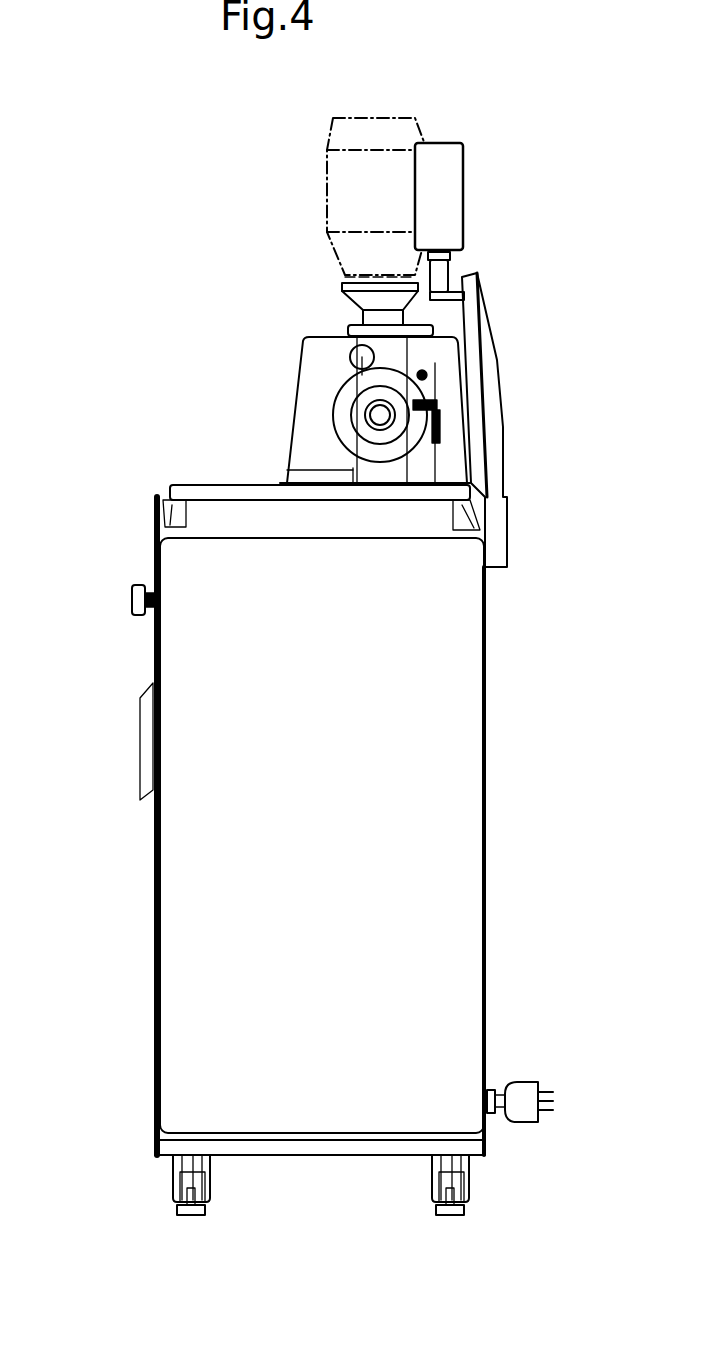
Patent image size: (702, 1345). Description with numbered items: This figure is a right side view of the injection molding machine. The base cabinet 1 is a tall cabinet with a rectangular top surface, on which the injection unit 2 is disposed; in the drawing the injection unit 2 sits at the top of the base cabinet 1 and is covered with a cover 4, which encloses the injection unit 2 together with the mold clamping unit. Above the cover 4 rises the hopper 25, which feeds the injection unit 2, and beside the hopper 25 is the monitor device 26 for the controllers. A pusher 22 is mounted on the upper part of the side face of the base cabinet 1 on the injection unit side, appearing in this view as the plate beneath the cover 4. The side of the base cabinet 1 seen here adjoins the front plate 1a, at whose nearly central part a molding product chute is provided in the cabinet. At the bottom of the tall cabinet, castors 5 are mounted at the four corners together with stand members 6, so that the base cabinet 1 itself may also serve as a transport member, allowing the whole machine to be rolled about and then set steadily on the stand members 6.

The base cabinet 1 is at (495, 685).
The front plate 1a is at (155, 930).
The injection unit 2 is at (403, 413).
The cover 4 is at (290, 392).
The castors 5 is at (175, 1199).
The stand members 6 is at (192, 1215).
The pusher 22 is at (210, 490).
The hopper 25 is at (340, 178).
The monitor device 26 is at (453, 205).